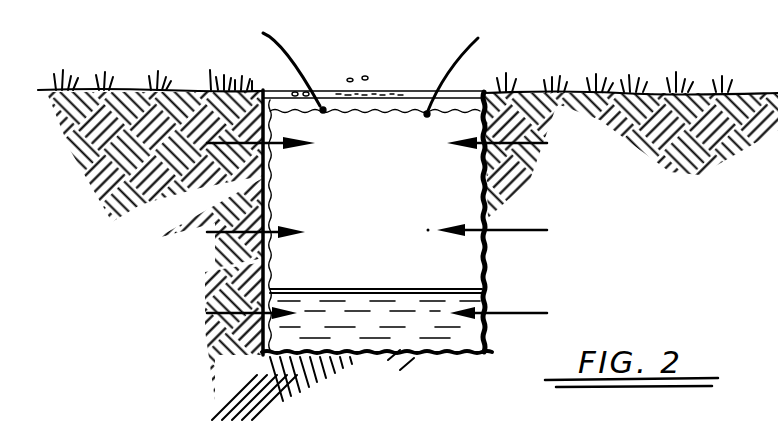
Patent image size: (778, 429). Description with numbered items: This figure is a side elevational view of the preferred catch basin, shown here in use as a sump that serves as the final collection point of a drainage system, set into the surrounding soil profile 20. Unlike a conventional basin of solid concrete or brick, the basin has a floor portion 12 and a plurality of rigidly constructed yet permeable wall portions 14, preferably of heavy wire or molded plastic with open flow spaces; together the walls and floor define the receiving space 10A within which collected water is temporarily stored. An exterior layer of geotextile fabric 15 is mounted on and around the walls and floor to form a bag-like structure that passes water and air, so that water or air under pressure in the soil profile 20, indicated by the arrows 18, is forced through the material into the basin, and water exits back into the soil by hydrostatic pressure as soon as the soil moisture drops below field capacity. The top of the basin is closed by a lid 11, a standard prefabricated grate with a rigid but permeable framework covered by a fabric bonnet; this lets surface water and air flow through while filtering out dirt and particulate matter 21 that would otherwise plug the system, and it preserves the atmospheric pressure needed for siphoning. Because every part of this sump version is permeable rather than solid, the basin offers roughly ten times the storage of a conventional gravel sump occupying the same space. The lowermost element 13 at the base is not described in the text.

The receiving space 10A is at (376, 256).
The lid 11 is at (404, 100).
The floor portion 12 is at (373, 353).
The tank bottom 13 is at (391, 390).
The permeable wall portions 14 is at (260, 261).
The geotextile fabric 15 is at (255, 176).
The arrows (water or air flow) 18 is at (215, 223).
The soil profile 20 is at (88, 207).
The particulate matter 21 is at (324, 105).